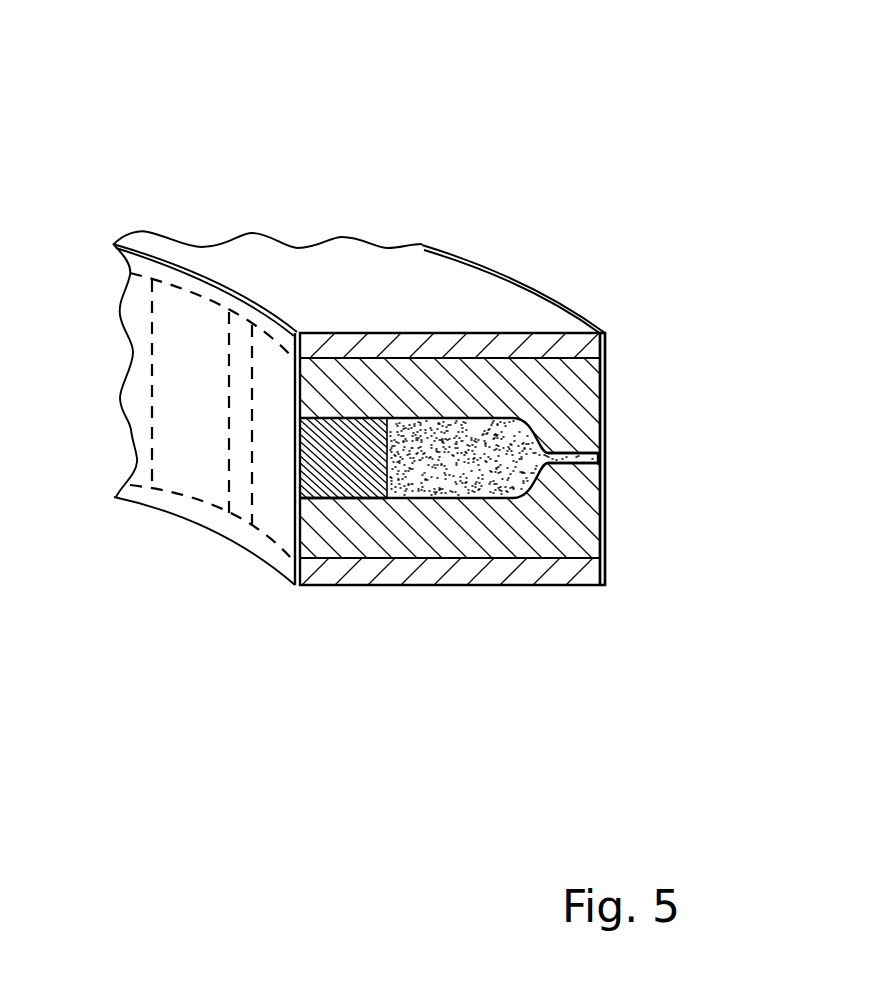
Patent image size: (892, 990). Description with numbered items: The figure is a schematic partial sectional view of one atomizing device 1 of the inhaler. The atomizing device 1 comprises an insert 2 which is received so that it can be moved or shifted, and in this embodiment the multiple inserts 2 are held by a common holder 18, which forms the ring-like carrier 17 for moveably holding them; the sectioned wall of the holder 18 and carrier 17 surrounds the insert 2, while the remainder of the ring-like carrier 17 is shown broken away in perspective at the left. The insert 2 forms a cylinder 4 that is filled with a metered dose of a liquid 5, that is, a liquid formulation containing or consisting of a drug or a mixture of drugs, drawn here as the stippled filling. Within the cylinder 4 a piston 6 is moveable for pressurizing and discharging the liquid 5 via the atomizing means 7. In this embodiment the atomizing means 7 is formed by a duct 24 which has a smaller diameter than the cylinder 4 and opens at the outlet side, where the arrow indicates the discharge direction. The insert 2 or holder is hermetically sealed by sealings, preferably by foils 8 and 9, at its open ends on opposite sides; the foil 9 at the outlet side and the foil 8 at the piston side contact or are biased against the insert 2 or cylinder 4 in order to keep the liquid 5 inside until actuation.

The atomizing device 1 is at (585, 290).
The insert 2 is at (373, 385).
The carrier 17 is at (466, 186).
The common holder 18 is at (452, 343).
The duct 24 is at (605, 429).
The atomizing means 7 is at (603, 457).
The foil 9 is at (605, 507).
The foil 8 is at (298, 473).
The piston 6 is at (363, 482).
The liquid 5 is at (430, 480).
The cylinder 4 is at (482, 498).